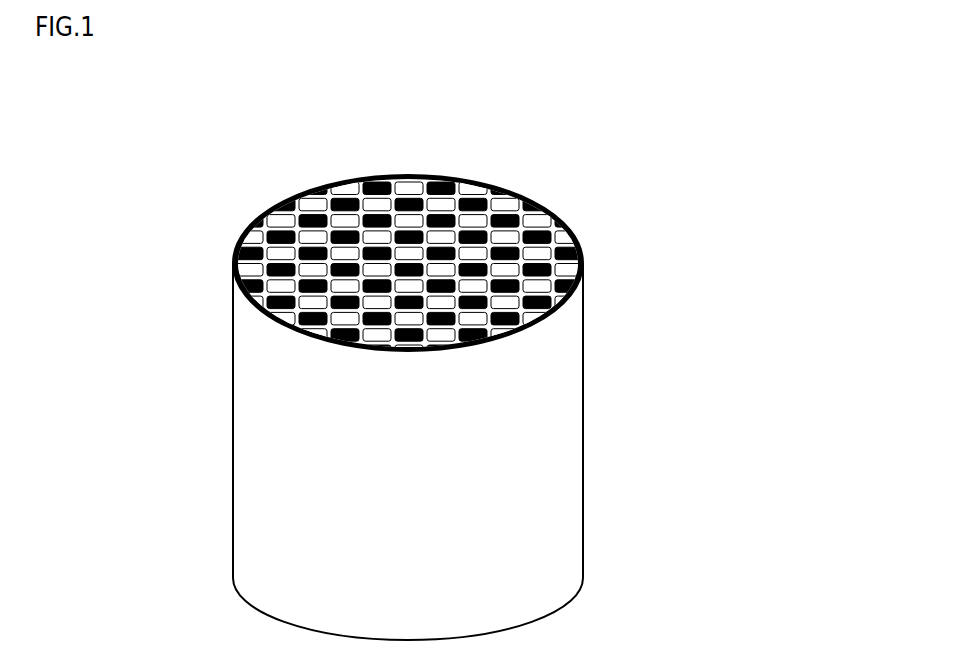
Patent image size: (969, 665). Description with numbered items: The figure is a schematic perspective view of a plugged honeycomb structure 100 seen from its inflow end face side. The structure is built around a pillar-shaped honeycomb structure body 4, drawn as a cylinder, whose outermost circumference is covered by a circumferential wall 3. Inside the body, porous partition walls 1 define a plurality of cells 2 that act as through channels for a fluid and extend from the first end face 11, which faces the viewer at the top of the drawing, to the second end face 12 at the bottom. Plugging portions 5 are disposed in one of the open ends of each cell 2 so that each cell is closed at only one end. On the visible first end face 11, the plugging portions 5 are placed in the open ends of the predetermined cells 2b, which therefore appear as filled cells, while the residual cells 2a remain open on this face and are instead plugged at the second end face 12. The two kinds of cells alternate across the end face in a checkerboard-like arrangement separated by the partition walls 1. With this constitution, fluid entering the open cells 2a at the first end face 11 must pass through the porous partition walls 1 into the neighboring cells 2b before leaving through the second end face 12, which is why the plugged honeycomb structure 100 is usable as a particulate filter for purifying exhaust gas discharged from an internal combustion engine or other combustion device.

The plugged honeycomb structure 100 is at (642, 82).
The porous partition walls 1 is at (397, 176).
The cells 2 is at (419, 237).
The residual cells 2a is at (447, 202).
The predetermined cells 2b is at (485, 203).
The plugging portions 5 is at (372, 176).
The first end face 11 is at (265, 211).
The second end face 12 is at (560, 608).
The circumferential wall 3 is at (583, 330).
The honeycomb structure body 4 is at (584, 407).